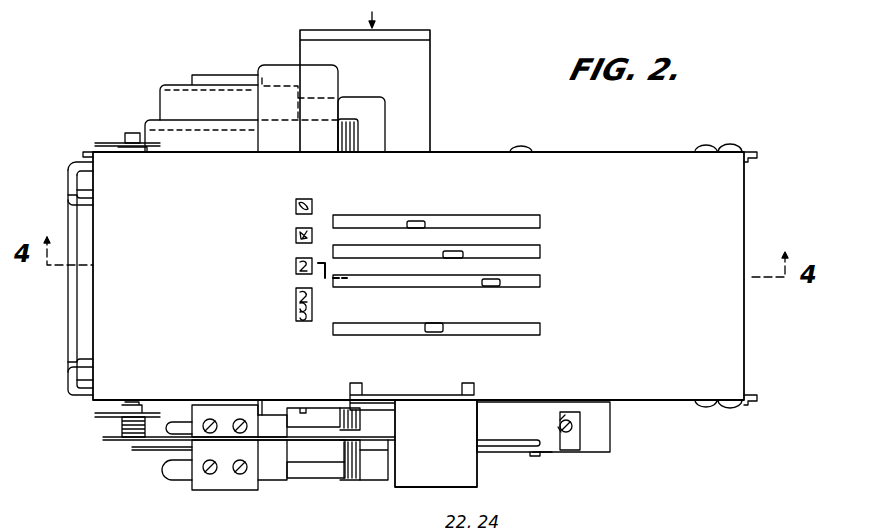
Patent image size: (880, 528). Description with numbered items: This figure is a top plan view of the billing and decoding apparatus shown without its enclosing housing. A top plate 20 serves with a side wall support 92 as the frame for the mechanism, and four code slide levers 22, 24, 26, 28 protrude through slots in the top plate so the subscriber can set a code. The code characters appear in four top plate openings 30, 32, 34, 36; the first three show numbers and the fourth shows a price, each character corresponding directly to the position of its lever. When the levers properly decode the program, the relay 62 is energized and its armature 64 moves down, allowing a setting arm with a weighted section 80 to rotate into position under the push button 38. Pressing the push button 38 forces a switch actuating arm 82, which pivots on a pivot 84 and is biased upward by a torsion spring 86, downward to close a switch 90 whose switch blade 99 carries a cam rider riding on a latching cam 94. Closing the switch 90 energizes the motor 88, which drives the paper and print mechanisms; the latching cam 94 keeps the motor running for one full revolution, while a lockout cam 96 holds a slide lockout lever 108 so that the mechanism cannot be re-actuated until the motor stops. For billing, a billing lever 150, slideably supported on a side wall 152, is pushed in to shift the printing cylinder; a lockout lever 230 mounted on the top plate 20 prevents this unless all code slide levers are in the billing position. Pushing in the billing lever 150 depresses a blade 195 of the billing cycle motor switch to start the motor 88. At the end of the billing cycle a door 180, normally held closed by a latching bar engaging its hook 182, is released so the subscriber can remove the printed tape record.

The top plate 20 is at (425, 276).
The code slide lever 22 is at (414, 220).
The code slide lever 24 is at (452, 250).
The code slide lever 26 is at (491, 289).
The code slide lever 28 is at (436, 334).
The top plate opening 30 is at (306, 200).
The top plate opening 32 is at (296, 238).
The top plate opening 34 is at (296, 270).
The top plate opening 36 is at (296, 310).
The push button 38 is at (459, 476).
The relay 62 is at (550, 454).
The armature 64 is at (543, 427).
The weighted section 80 is at (492, 447).
The switch actuating arm 82 is at (386, 444).
The pivot 84 is at (131, 441).
The torsion spring 86 is at (120, 425).
The motor 88 is at (178, 84).
The switch 90 is at (228, 490).
The side wall support 92 is at (85, 405).
The latching cam 94 is at (316, 480).
The lockout cam 96 is at (297, 415).
The switch blade 99 is at (277, 480).
The slide lockout lever 108 is at (366, 404).
The billing lever 150 is at (420, 123).
The side wall 152 is at (89, 150).
The door 180 is at (68, 325).
The hook 182 is at (75, 196).
The blade 195 is at (263, 415).
The lockout lever 230 is at (278, 76).